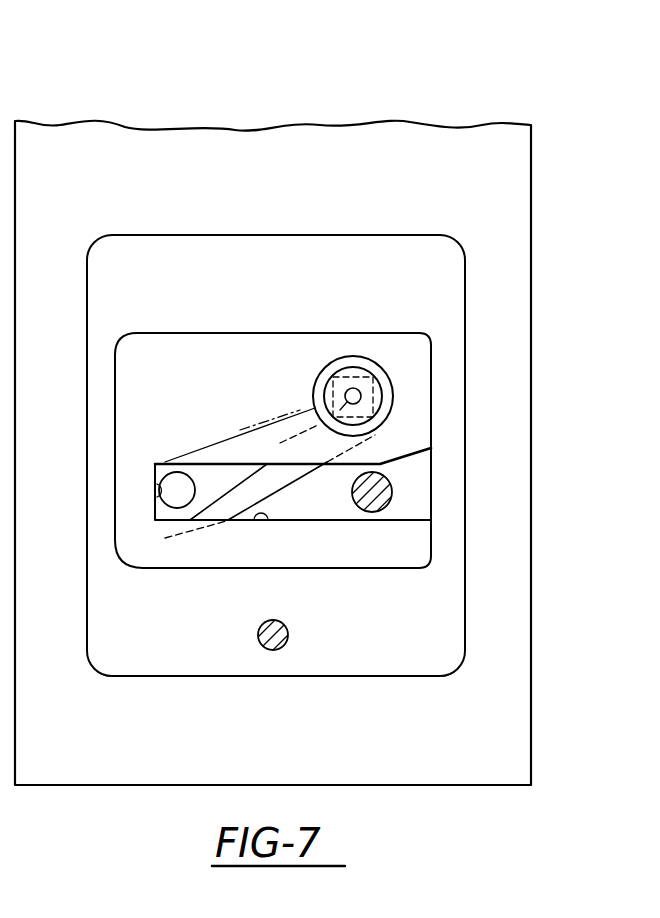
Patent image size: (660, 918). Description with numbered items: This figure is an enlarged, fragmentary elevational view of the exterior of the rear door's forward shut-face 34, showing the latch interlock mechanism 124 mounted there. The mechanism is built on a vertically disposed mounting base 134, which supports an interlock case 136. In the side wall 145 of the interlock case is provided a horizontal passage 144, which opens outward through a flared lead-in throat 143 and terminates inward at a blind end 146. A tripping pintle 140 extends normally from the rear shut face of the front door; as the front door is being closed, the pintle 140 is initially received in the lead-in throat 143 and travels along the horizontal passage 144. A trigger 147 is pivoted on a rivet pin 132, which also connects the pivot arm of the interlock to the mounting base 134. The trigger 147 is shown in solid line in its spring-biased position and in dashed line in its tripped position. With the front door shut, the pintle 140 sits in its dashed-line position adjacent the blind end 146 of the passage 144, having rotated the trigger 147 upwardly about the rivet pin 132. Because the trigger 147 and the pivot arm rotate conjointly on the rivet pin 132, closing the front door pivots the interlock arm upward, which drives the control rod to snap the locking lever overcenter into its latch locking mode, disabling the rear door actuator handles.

The forward shut-face 34 is at (232, 132).
The latch interlock mechanism 124 is at (355, 222).
The mounting base 134 is at (147, 250).
The interlock case 136 is at (197, 332).
The interlock case side wall 145 is at (274, 348).
The lead-in throat 143 is at (430, 515).
The rivet pin 132 is at (356, 395).
The trigger 147 is at (237, 432).
The blind end 146 is at (157, 510).
The tripping pintle 140 is at (168, 510).
The horizontal passage 144 is at (250, 521).